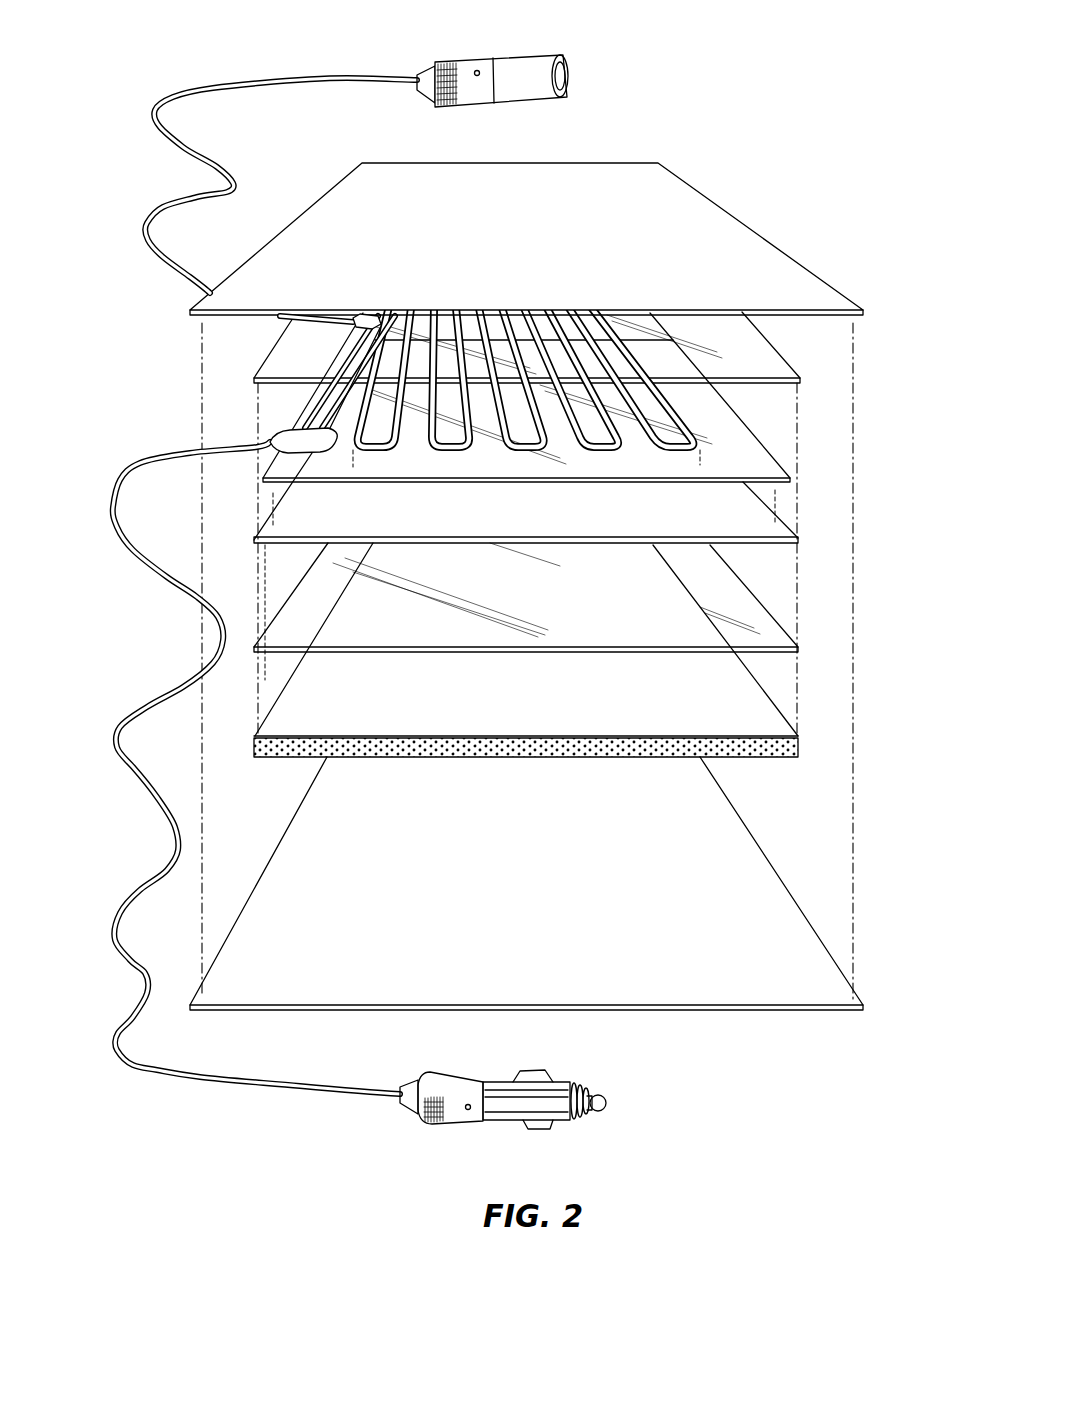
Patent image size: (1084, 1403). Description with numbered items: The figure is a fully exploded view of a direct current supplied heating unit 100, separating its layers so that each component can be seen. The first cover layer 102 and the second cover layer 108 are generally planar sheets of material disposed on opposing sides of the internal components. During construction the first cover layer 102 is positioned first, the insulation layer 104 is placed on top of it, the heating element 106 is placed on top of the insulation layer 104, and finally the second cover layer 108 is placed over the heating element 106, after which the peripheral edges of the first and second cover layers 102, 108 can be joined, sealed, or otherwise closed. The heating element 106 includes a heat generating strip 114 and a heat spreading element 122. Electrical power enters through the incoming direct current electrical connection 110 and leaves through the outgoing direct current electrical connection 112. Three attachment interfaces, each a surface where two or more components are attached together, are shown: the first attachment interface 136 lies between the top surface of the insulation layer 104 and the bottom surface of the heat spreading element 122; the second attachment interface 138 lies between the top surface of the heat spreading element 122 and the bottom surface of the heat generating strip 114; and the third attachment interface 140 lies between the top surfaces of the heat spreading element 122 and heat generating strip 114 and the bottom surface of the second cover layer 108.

The heating unit 100 is at (785, 172).
The first cover layer 102 is at (729, 915).
The insulation layer 104 is at (729, 700).
The heating element 106 is at (190, 540).
The second cover layer 108 is at (733, 252).
The incoming direct current electrical connection 110 is at (587, 1120).
The outgoing direct current electrical connection 112 is at (513, 53).
The heat generating strip 114 is at (680, 400).
The heat spreading element 122 is at (740, 510).
The first attachment interface 136 is at (743, 616).
The second attachment interface 138 is at (290, 458).
The third attachment interface 140 is at (737, 353).